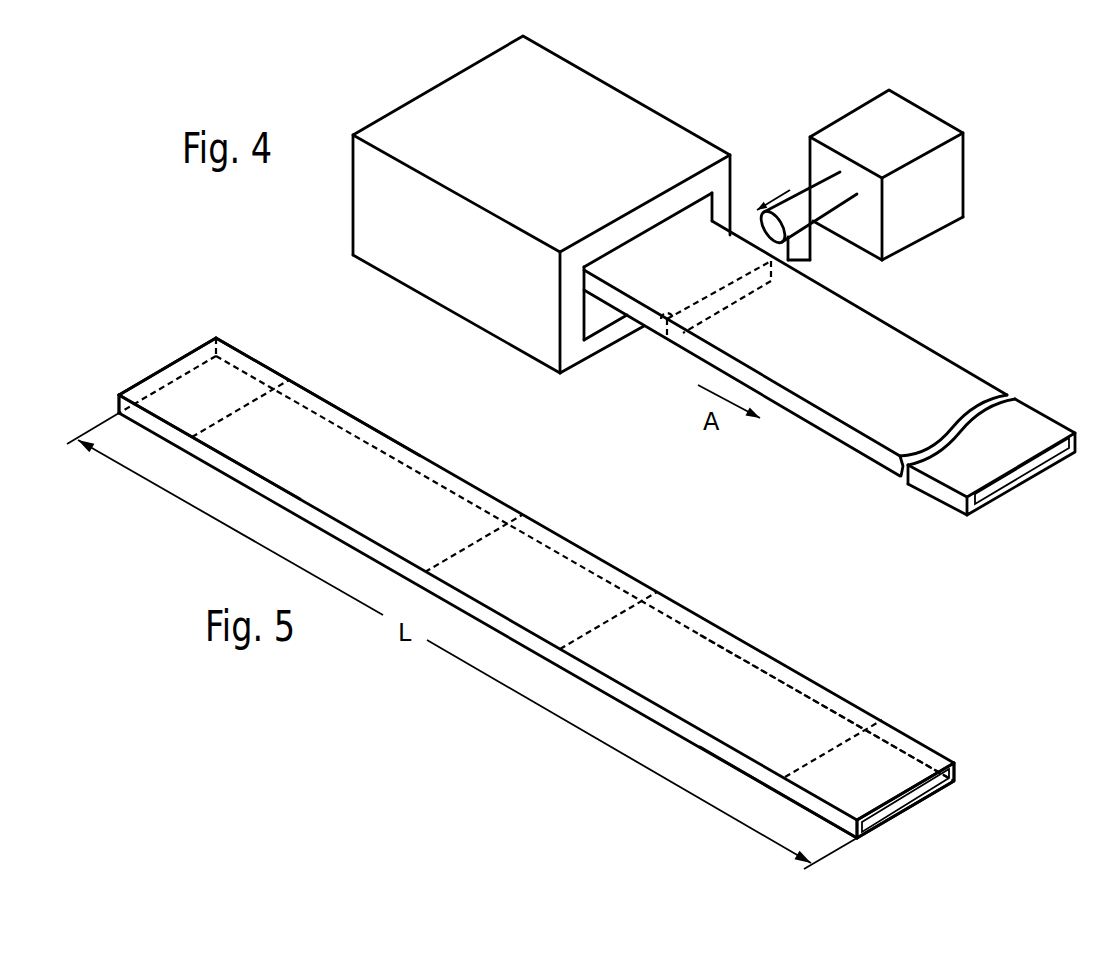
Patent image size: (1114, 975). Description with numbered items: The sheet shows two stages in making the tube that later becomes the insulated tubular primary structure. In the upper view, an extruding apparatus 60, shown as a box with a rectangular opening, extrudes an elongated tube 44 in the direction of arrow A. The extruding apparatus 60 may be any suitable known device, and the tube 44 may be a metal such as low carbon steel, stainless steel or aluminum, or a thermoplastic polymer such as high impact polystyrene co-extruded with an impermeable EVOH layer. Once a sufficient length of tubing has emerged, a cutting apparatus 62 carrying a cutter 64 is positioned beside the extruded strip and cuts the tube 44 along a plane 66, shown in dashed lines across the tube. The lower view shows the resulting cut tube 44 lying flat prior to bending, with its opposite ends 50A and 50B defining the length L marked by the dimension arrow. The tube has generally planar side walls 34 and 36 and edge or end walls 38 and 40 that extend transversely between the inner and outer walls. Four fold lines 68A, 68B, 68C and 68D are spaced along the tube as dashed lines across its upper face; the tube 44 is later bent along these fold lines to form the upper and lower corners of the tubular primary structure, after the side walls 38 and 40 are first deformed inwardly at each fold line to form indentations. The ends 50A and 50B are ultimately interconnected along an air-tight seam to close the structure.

In FIG. 5, the side wall 34 is at (797, 698).
In FIG. 5, the side wall 36 is at (878, 828).
In FIG. 5, the side wall 38 is at (150, 423).
In FIG. 5, the end wall 40 is at (247, 350).
In FIG. 4, the elongated tube 44 is at (915, 340).
In FIG. 5, the elongated tube 44 is at (743, 642).
In FIG. 5, the first end of tube 50A is at (173, 363).
In FIG. 5, the second end of tube 50B is at (903, 810).
In FIG. 4, the extruding apparatus 60 is at (628, 90).
In FIG. 4, the cutting apparatus 62 is at (857, 110).
In FIG. 4, the cutter 64 is at (808, 260).
In FIG. 4, the cutting plane 66 is at (657, 322).
In FIG. 5, the fold line 68A is at (289, 380).
In FIG. 5, the fold line 68B is at (522, 515).
In FIG. 5, the fold line 68C is at (657, 592).
In FIG. 5, the fold line 68D is at (882, 720).